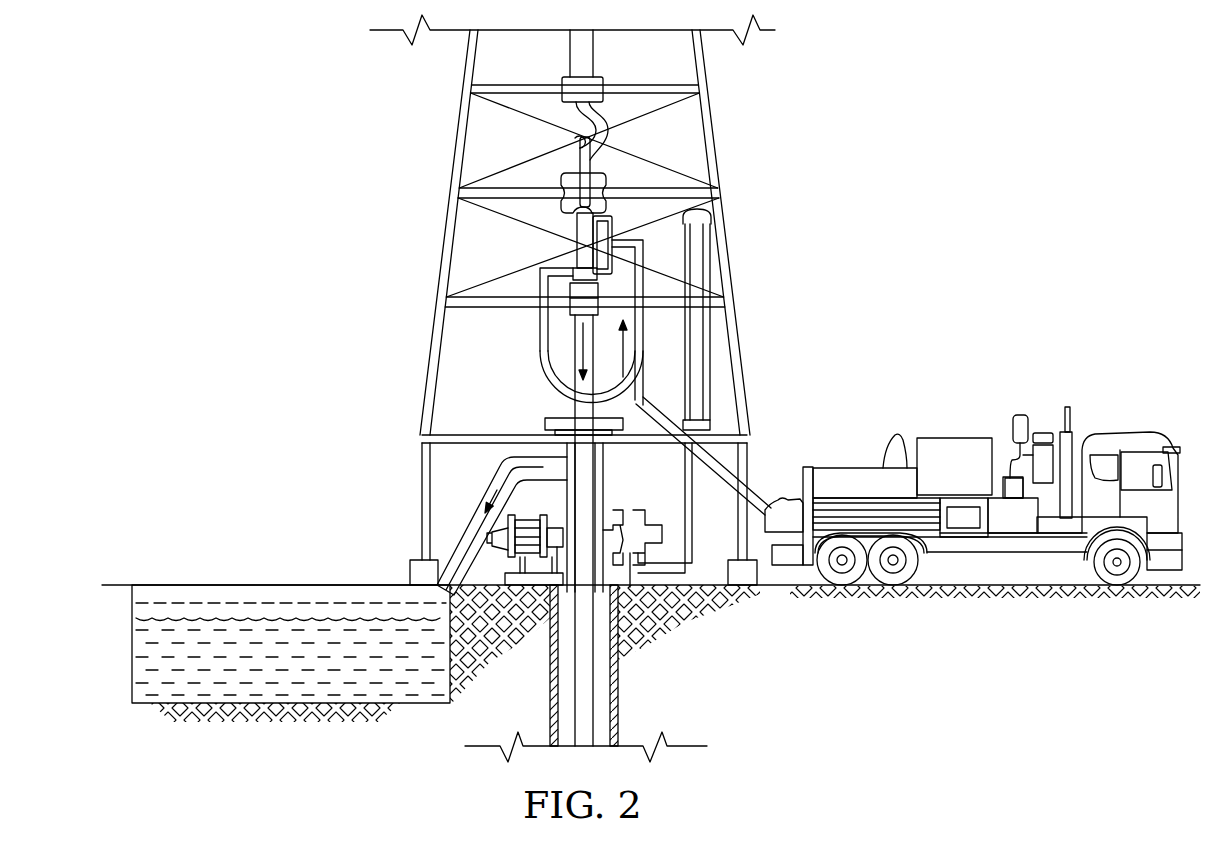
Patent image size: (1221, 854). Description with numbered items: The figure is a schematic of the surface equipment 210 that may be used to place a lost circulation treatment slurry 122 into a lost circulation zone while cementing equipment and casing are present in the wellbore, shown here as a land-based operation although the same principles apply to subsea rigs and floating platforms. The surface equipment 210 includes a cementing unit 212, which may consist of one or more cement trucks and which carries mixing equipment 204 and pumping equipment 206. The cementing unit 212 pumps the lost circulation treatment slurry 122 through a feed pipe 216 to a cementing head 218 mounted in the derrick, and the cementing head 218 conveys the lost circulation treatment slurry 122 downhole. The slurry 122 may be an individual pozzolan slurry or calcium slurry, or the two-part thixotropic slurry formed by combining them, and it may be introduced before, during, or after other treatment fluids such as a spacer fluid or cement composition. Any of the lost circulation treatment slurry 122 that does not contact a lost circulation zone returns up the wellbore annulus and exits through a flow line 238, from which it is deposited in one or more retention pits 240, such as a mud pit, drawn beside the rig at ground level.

The lost circulation treatment slurry 122 is at (572, 350).
The mixing equipment 204 is at (957, 438).
The pumping equipment 206 is at (847, 468).
The surface equipment 210 is at (962, 218).
The cementing unit 212 is at (977, 517).
The feed pipe 216 is at (753, 498).
The cementing head 218 is at (548, 178).
The flow line 238 is at (455, 533).
The retention pit 240 is at (132, 645).